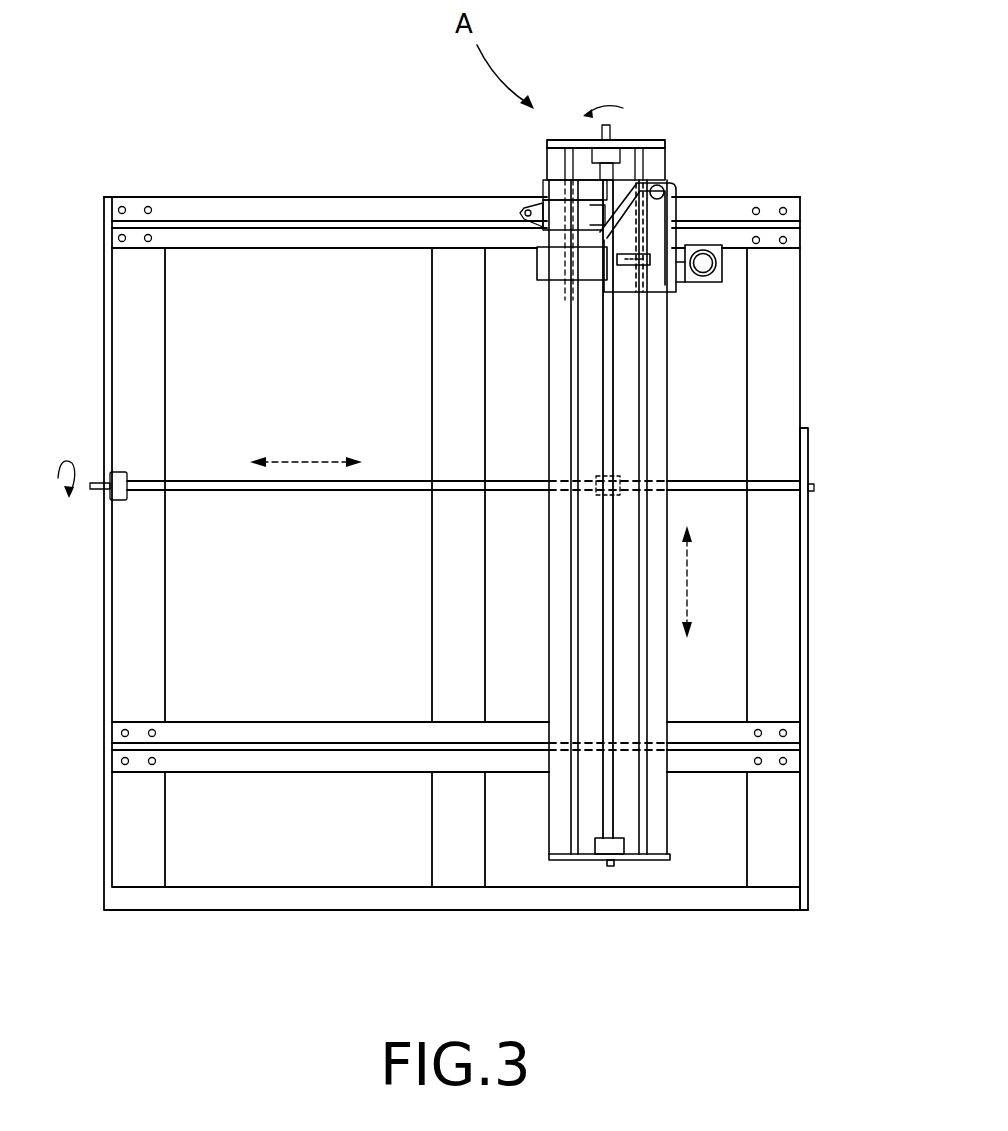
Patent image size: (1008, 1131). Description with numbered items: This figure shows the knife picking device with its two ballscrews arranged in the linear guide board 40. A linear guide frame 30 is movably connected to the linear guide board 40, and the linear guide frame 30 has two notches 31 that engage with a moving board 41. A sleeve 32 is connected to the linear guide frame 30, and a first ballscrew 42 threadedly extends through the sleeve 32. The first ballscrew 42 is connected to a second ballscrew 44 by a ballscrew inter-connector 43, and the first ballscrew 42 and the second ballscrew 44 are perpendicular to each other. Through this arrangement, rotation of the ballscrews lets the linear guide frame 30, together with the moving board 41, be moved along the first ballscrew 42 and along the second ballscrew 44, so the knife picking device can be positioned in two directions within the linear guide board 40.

The linear guide frame 30 is at (673, 190).
The notches 31 is at (543, 172).
The sleeve 32 is at (545, 193).
The linear guide board 40 is at (243, 165).
The moving board 41 is at (663, 361).
The first ballscrew 42 is at (603, 319).
The ballscrew inter-connector 43 is at (612, 480).
The second ballscrew 44 is at (766, 488).